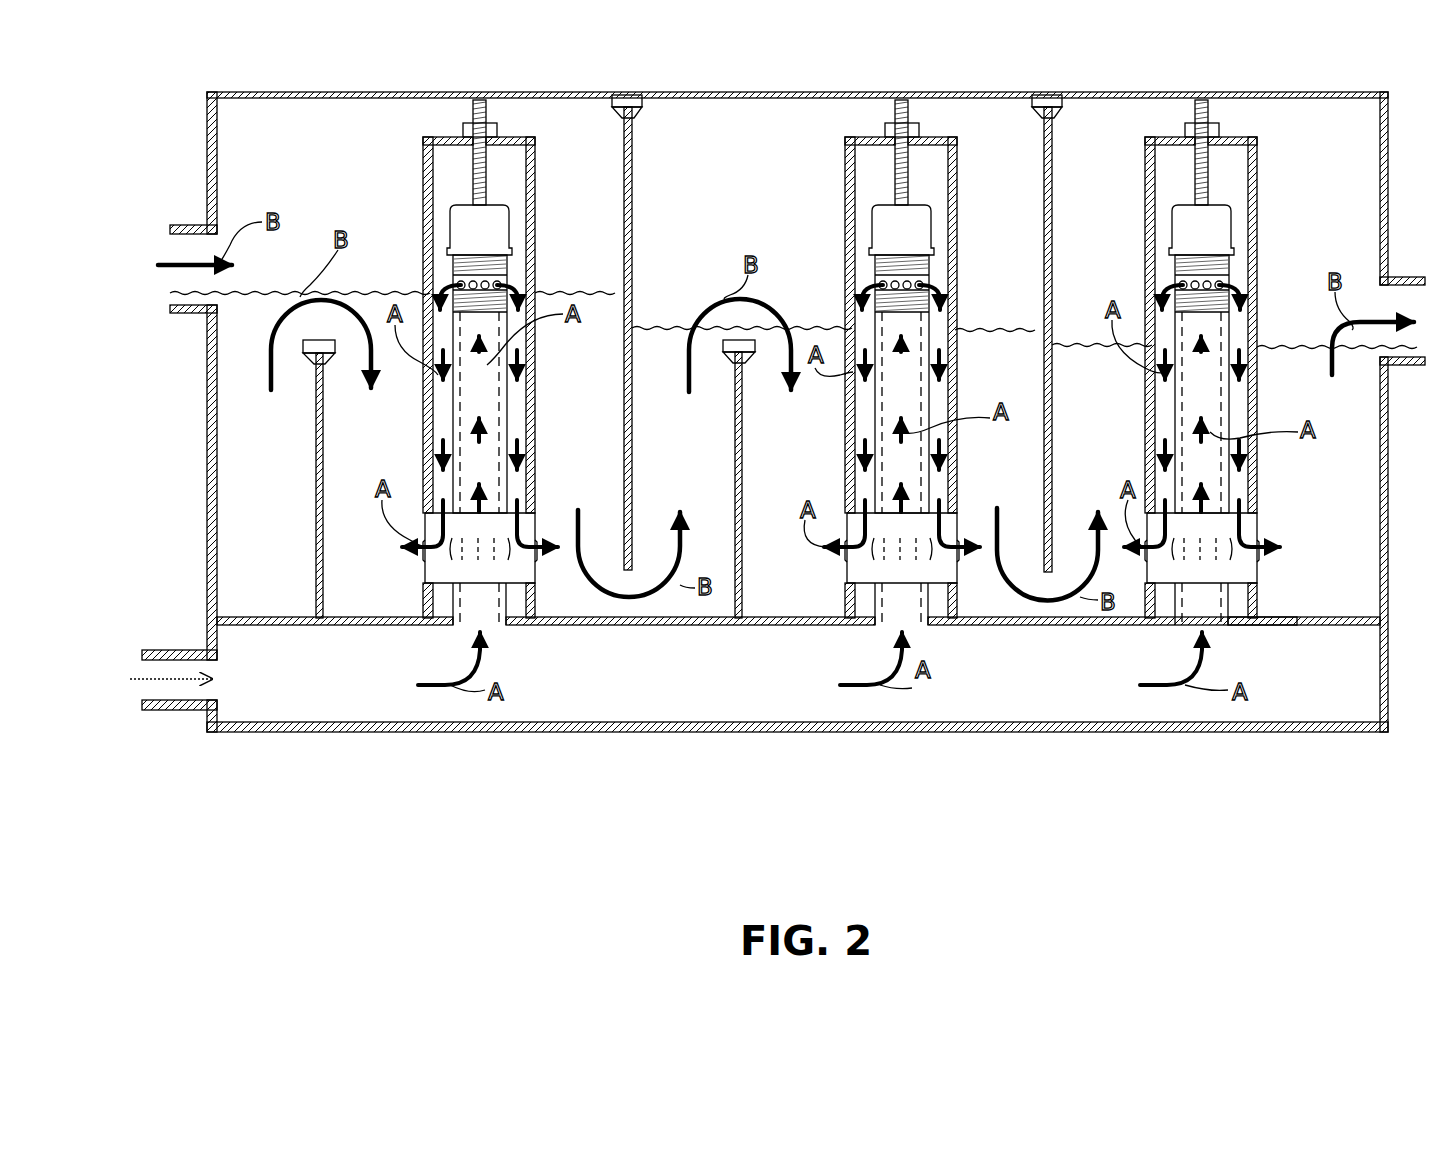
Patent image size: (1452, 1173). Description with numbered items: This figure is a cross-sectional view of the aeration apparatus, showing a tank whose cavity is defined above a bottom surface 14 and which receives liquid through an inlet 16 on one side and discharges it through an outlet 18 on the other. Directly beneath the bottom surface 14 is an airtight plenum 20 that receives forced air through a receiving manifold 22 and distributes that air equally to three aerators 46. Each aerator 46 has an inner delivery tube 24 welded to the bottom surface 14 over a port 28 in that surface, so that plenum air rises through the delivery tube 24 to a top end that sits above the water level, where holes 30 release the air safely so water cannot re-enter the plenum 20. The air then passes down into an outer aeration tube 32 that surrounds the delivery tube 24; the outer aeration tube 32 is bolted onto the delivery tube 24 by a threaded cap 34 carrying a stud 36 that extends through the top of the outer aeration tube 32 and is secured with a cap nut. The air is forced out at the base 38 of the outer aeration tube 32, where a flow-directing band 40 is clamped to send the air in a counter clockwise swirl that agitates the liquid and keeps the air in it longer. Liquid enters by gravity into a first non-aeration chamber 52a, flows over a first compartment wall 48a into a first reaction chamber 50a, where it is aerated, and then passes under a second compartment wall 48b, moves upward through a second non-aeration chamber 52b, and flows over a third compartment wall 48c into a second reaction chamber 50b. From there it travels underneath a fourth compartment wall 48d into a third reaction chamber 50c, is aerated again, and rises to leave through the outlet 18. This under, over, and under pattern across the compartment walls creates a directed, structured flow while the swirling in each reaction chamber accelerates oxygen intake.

The bottom surface 14 is at (255, 617).
The inlet 16 is at (190, 233).
The outlet 18 is at (1405, 277).
The plenum 20 is at (652, 690).
The inlet or receiving manifold 22 is at (160, 707).
The inner delivery tube 24 is at (505, 432).
The holes or ports 28 is at (492, 625).
The holes 30 is at (487, 285).
The outer aeration tube 32 is at (533, 372).
The cap 34 is at (466, 238).
The stud 36 is at (473, 150).
The base 38 is at (423, 605).
The flow-directing band 40 is at (515, 570).
The aerator 46 is at (820, 210).
The first compartment wall 48a is at (323, 470).
The second compartment wall 48b is at (632, 212).
The third compartment wall 48c is at (742, 488).
The fourth compartment wall 48d is at (1052, 270).
The first reaction chamber 50a is at (607, 445).
The second reaction chamber 50b is at (933, 465).
The third reaction chamber 50c is at (1234, 377).
The first non-aeration chamber 52a is at (250, 457).
The second non-aeration chamber 52b is at (742, 371).